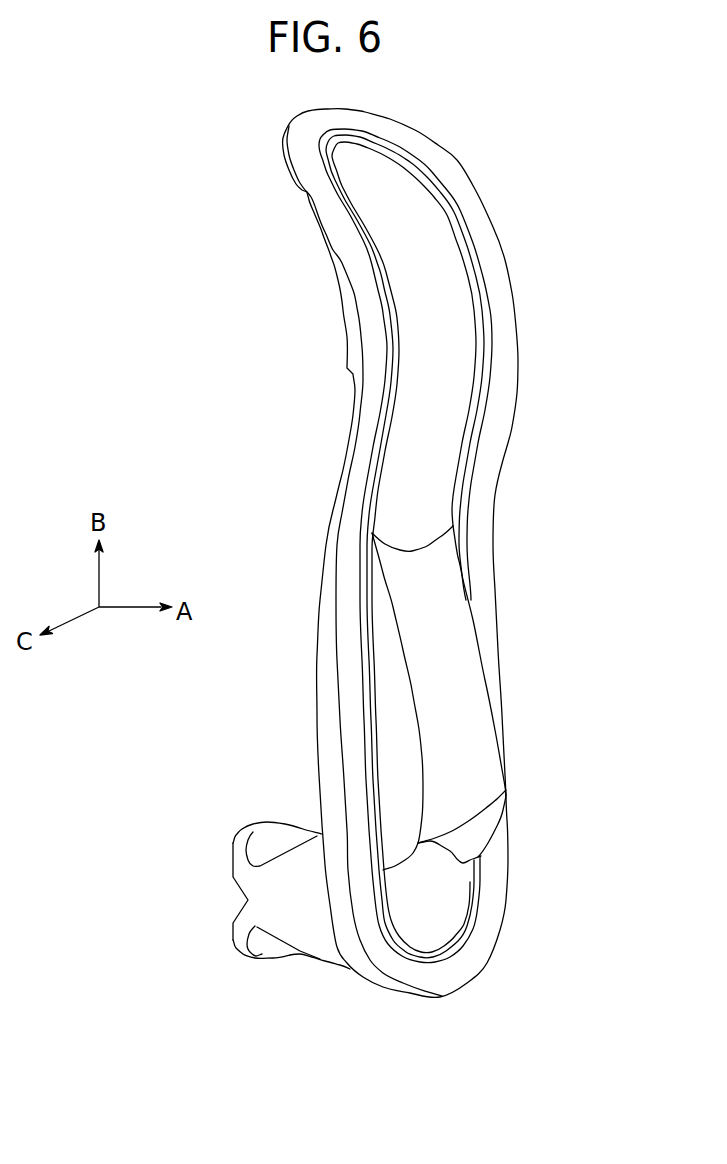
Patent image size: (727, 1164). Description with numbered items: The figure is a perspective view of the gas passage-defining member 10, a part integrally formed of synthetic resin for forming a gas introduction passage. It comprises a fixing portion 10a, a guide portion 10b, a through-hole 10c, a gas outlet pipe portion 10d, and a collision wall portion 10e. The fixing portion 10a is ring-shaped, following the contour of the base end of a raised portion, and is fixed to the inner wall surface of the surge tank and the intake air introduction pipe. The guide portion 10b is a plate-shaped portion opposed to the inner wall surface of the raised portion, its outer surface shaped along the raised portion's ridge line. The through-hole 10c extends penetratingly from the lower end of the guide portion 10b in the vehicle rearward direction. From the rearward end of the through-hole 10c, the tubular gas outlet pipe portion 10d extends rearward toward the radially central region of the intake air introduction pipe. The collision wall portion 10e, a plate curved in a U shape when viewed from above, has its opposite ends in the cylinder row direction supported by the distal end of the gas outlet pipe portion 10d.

The gas passage-defining member 10 is at (305, 268).
The fixing portion 10a is at (372, 338).
The guide portion 10b is at (418, 412).
The through-hole 10c is at (440, 907).
The gas outlet pipe portion 10d is at (313, 932).
The collision wall portion 10e is at (273, 840).